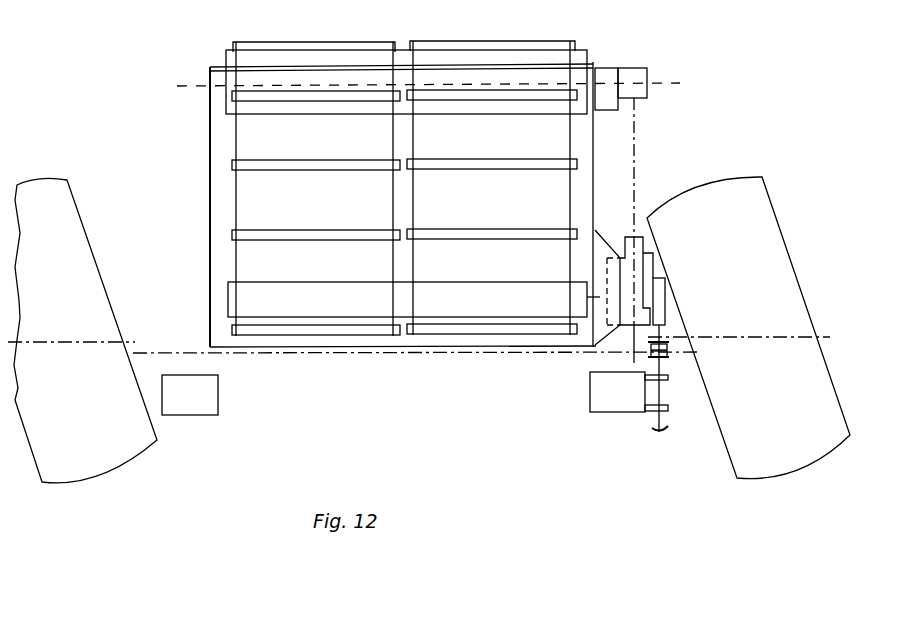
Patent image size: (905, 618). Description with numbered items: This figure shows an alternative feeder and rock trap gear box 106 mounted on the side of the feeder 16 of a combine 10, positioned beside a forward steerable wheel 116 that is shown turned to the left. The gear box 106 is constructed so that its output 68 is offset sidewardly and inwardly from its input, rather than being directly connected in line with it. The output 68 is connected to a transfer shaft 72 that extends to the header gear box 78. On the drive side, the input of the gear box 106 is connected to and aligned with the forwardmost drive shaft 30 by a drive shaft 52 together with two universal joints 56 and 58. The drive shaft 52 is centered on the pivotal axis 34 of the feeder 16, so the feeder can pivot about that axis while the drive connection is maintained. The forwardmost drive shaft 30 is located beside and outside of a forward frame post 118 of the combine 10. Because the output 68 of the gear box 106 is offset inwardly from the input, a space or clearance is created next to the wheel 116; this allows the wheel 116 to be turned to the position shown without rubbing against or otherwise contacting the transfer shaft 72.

The combine 10 is at (152, 470).
The feeder 16 is at (383, 354).
The forwardmost drive shaft 30 is at (653, 421).
The pivotal axis 34 is at (302, 353).
The drive shaft 52 is at (668, 356).
The universal joint 56 is at (668, 358).
The universal joint 58 is at (664, 343).
The output 68 is at (625, 217).
The transfer shaft 72 is at (635, 148).
The header gear box 78 is at (642, 67).
The feeder and rock trap gear box 106 is at (662, 249).
The forward steerable wheel 116 is at (48, 178).
The forward frame post 118 is at (590, 390).